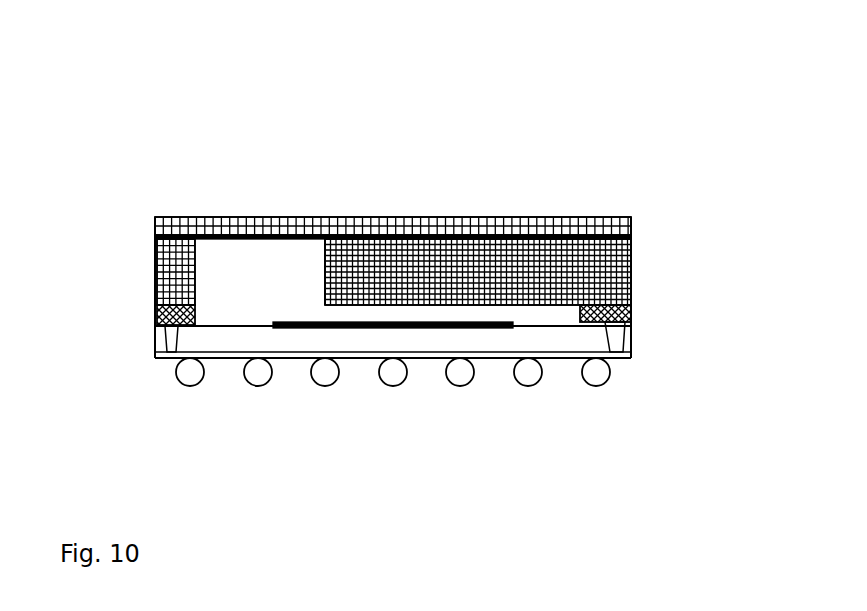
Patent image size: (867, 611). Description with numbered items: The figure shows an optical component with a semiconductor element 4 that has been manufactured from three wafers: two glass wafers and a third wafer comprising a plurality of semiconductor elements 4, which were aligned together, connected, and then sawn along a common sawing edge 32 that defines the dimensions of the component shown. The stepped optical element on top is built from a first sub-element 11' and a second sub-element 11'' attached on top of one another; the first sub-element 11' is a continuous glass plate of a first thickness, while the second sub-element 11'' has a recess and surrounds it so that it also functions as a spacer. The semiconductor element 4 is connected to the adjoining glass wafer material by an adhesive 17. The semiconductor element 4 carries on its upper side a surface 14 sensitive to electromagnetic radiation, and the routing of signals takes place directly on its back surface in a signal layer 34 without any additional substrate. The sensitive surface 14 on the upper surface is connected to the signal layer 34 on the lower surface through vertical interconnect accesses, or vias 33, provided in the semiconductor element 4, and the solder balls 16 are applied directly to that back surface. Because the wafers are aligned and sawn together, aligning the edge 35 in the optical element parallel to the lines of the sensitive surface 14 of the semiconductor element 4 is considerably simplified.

The first sub-element 11' is at (393, 140).
The second sub-element 11'' is at (394, 200).
The common sawing edge 32 is at (142, 221).
The adhesive 17 is at (632, 308).
The vertical interconnect accesses (vias) 33 is at (613, 337).
The signal layer 34 is at (613, 353).
The solder balls 16 is at (190, 372).
The edge 35 is at (313, 306).
The sensitive surface 14 is at (442, 327).
The semiconductor element 4 is at (483, 338).